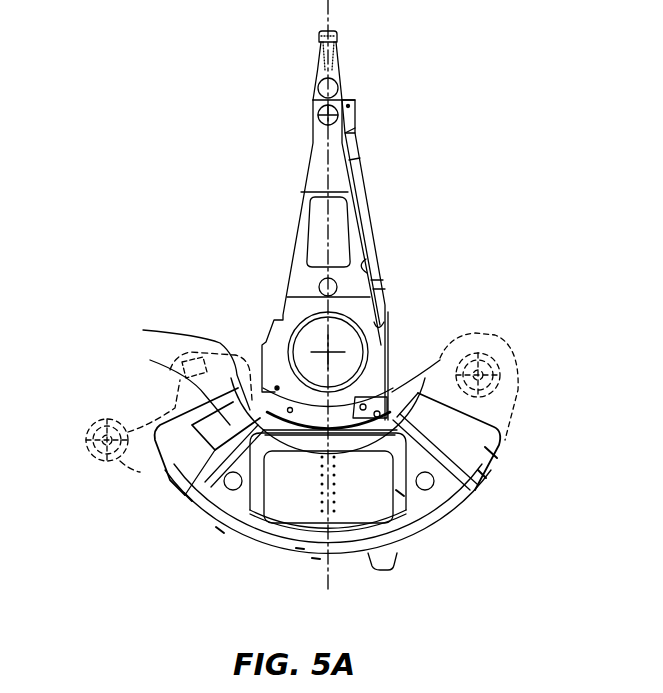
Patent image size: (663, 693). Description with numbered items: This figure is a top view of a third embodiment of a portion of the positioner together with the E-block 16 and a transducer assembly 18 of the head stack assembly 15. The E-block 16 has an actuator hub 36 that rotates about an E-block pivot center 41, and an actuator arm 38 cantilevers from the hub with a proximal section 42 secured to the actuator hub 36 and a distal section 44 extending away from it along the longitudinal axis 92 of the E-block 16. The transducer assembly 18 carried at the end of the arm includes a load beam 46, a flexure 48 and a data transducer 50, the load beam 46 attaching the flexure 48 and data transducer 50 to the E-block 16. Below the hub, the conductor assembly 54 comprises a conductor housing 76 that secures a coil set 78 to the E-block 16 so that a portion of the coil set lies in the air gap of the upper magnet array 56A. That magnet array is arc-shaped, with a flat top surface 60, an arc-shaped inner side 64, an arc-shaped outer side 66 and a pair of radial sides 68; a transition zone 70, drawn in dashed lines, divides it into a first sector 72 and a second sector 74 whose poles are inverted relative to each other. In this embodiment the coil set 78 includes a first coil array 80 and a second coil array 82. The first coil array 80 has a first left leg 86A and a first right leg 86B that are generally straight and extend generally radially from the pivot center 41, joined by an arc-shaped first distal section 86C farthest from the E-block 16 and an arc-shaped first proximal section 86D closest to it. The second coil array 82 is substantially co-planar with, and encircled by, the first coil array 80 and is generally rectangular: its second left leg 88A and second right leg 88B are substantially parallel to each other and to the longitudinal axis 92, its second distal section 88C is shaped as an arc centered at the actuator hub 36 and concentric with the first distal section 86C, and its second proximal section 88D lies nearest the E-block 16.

The head stack assembly 15 is at (384, 167).
The E-block 16 is at (278, 300).
The transducer assembly 18 is at (347, 57).
The actuator hub 36 is at (348, 340).
The actuator arm 38 is at (302, 216).
The E-block pivot center 41 is at (328, 352).
The proximal section 42 is at (365, 265).
The distal section 44 is at (346, 102).
The load beam 46 is at (318, 80).
The flexure 48 is at (318, 50).
The data transducer 50 is at (323, 32).
The conductor assembly 54 is at (256, 547).
The upper magnet array 56A is at (503, 443).
The top surface 60 is at (463, 440).
The inner side 64 is at (408, 395).
The outer side 66 is at (497, 463).
The radial side 68 is at (172, 375).
The transition zone 70 is at (402, 483).
The first sector 72 is at (215, 518).
The second sector 74 is at (428, 500).
The conductor housing 76 is at (128, 472).
The coil set 78 is at (351, 557).
The first coil array 80 is at (200, 503).
The second coil array 82 is at (240, 530).
The first left leg 86A is at (484, 462).
The first right leg 86B is at (175, 408).
The first distal section 86C is at (300, 548).
The first proximal section 86D is at (262, 348).
The second left leg 88A is at (400, 493).
The second right leg 88B is at (188, 497).
The second distal section 88C is at (316, 560).
The second proximal section 88D is at (220, 530).
The longitudinal axis 92 is at (358, 258).